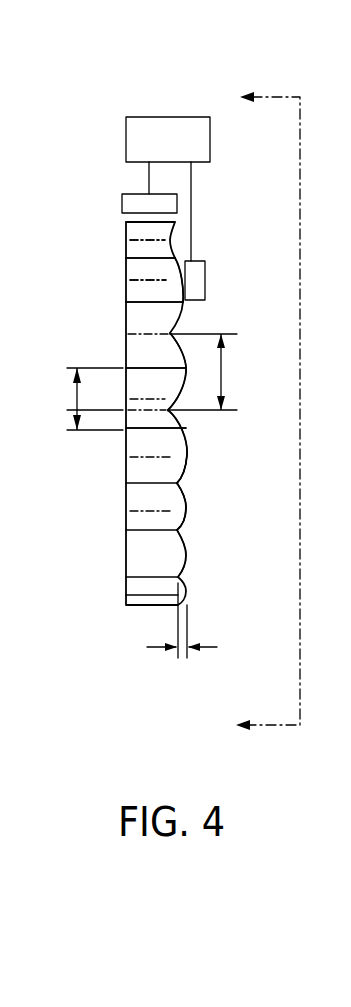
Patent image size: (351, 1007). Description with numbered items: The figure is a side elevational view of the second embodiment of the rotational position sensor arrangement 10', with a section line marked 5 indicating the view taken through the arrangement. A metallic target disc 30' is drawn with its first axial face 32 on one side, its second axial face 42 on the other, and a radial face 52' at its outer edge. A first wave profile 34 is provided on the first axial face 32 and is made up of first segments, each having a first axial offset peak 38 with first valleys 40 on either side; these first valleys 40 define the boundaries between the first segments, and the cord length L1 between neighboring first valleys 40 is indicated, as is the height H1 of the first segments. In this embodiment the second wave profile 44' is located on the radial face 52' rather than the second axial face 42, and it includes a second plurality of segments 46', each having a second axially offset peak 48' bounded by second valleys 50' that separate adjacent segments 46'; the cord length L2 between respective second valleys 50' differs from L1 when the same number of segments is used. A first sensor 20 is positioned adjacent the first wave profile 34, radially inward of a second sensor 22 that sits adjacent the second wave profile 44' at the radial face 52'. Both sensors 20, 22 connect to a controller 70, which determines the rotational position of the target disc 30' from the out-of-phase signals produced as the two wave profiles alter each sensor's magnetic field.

The rotational position sensor arrangement 10' is at (166, 44).
The controller 70 is at (185, 120).
The second sensor 22 is at (124, 200).
The first sensor 20 is at (198, 283).
The radial face 52' is at (109, 206).
The second axially offset peak 48' is at (125, 297).
The second valleys 50' is at (100, 286).
The second plurality of segments 46' is at (150, 378).
The first valleys 40 is at (171, 334).
The first axial offset peak 38 is at (187, 368).
The first axial face 32 is at (216, 468).
The first wave profile 34 is at (184, 512).
The target disc 30' is at (197, 557).
The second wave profile 44' is at (130, 448).
The second axial face 42 is at (112, 556).
The cord length between first valleys L1 is at (222, 372).
The cord length between second valleys L2 is at (74, 400).
The height of the first plurality of segments H1 is at (200, 622).
The section line 5- 5 is at (257, 416).